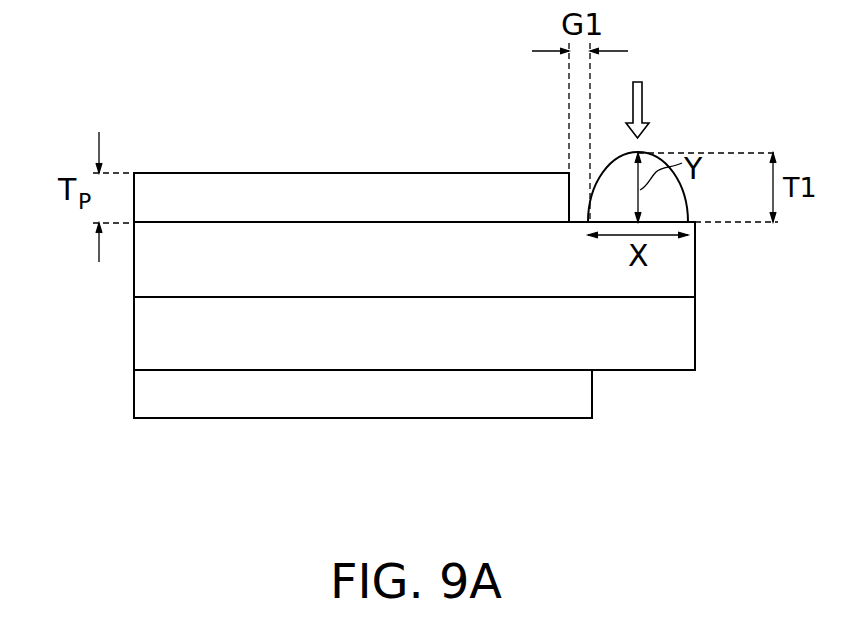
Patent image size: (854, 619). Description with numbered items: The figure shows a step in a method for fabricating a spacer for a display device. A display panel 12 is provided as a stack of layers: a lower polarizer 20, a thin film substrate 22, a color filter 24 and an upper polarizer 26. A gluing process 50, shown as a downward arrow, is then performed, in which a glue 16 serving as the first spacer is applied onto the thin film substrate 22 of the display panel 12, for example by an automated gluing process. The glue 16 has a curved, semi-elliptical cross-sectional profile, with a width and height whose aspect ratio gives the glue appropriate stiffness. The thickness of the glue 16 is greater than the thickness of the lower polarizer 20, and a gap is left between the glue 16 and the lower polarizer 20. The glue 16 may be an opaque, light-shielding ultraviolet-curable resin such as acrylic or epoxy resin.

The display panel 12 is at (414, 348).
The lower polarizer 20 is at (180, 200).
The thin film substrate 22 is at (230, 273).
The color filter 24 is at (278, 348).
The upper polarizer 26 is at (157, 474).
The glue 16 is at (676, 205).
The gluing process 50 is at (644, 103).